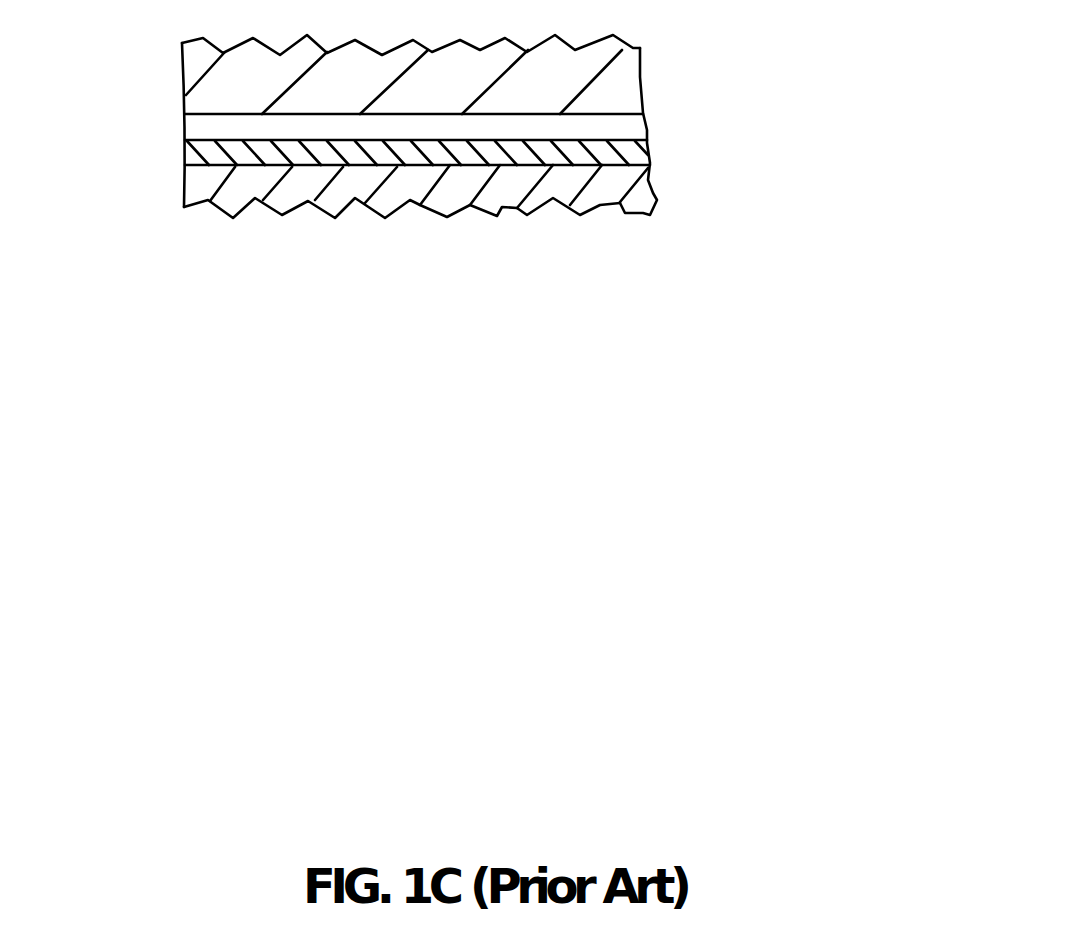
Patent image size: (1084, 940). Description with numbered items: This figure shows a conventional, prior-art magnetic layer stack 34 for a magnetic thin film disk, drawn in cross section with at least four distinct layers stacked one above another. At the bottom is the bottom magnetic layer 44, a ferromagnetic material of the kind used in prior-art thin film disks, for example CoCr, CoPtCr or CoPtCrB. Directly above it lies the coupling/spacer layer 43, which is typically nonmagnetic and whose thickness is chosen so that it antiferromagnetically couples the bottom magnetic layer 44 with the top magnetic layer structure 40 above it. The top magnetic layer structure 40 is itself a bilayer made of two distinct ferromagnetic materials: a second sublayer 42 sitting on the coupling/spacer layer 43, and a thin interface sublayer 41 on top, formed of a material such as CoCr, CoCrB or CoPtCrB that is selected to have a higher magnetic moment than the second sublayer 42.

The magnetic layer stack 34 is at (163, 47).
The top magnetic layer structure 40 is at (692, 56).
The interface sublayer 41 is at (622, 100).
The second sublayer 42 is at (623, 128).
The coupling/spacer layer 43 is at (637, 152).
The bottom magnetic layer 44 is at (632, 200).